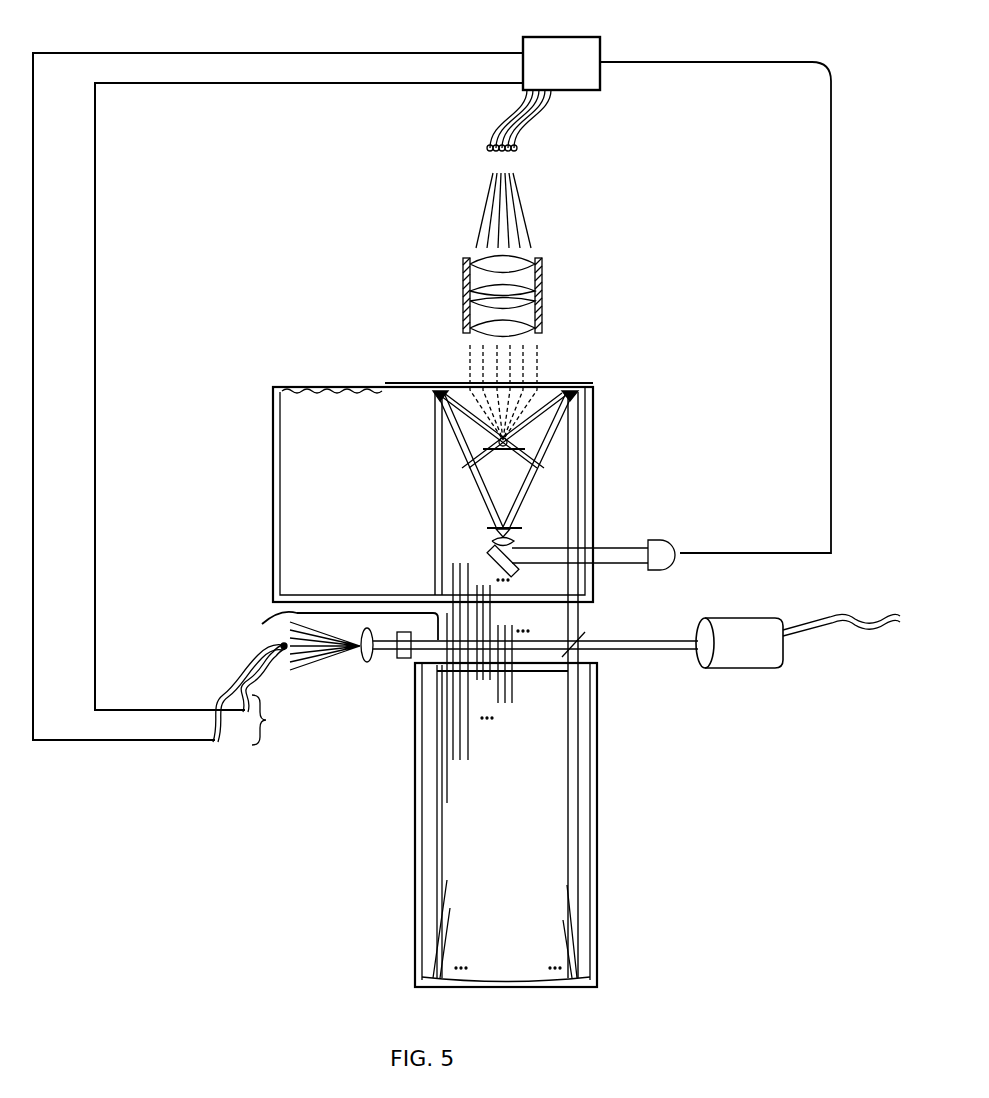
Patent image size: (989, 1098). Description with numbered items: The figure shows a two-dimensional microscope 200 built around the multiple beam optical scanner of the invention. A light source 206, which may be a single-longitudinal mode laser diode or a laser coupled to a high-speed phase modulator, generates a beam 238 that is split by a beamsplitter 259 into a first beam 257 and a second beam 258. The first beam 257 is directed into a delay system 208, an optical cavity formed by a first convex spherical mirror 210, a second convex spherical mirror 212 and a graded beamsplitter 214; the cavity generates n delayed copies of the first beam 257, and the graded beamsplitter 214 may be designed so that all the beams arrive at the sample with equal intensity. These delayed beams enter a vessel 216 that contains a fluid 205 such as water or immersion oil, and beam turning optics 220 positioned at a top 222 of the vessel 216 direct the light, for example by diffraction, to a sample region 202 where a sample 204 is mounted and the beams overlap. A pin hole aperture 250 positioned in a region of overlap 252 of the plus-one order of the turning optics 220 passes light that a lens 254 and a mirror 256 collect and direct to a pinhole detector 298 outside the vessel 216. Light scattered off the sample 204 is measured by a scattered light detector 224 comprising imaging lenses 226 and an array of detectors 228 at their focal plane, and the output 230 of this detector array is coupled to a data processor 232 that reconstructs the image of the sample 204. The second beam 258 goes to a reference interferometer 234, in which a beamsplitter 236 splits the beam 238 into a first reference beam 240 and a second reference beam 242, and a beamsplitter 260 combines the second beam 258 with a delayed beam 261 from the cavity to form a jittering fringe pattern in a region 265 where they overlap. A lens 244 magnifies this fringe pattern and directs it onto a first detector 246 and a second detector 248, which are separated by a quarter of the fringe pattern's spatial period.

The two-dimensional microscope 200 is at (684, 220).
The sample region 202 is at (510, 455).
The sample 204 is at (520, 398).
The refractive index matching fluid 205 is at (316, 398).
The light source 206 is at (762, 620).
The delay system 208 is at (598, 813).
The first convex spherical mirror 210 is at (580, 985).
The second convex spherical mirror 212 is at (588, 657).
The graded beamsplitter 214 is at (550, 673).
The vessel 216 is at (272, 470).
The beam turning optics 220 is at (432, 396).
The top of the vessel 222 is at (607, 386).
The scattered light detector 224 is at (560, 130).
The imaging lenses 226 is at (558, 245).
The array of detectors 228 is at (510, 151).
The output of the scattered light detector array 230 is at (485, 128).
The data processor 232 is at (600, 45).
The reference interferometer 234 is at (292, 612).
The beamsplitter 236 is at (400, 630).
The beam 238 is at (677, 640).
The first reference beam 240 is at (398, 648).
The second reference beam 242 is at (372, 632).
The lens 244 is at (365, 662).
The first detector 246 is at (252, 642).
The second detector 248 is at (282, 655).
The pin hole aperture 250 is at (524, 528).
The region of overlap 252 is at (510, 524).
The lens 254 is at (492, 540).
The mirror 256 is at (512, 569).
The first beam 257 is at (568, 778).
The second beam 258 is at (437, 618).
The beamsplitter 259 is at (612, 640).
The beamsplitter 260 is at (445, 662).
The delayed beam 261 is at (462, 748).
The region 265 is at (357, 648).
The pinhole detector 298 is at (678, 565).